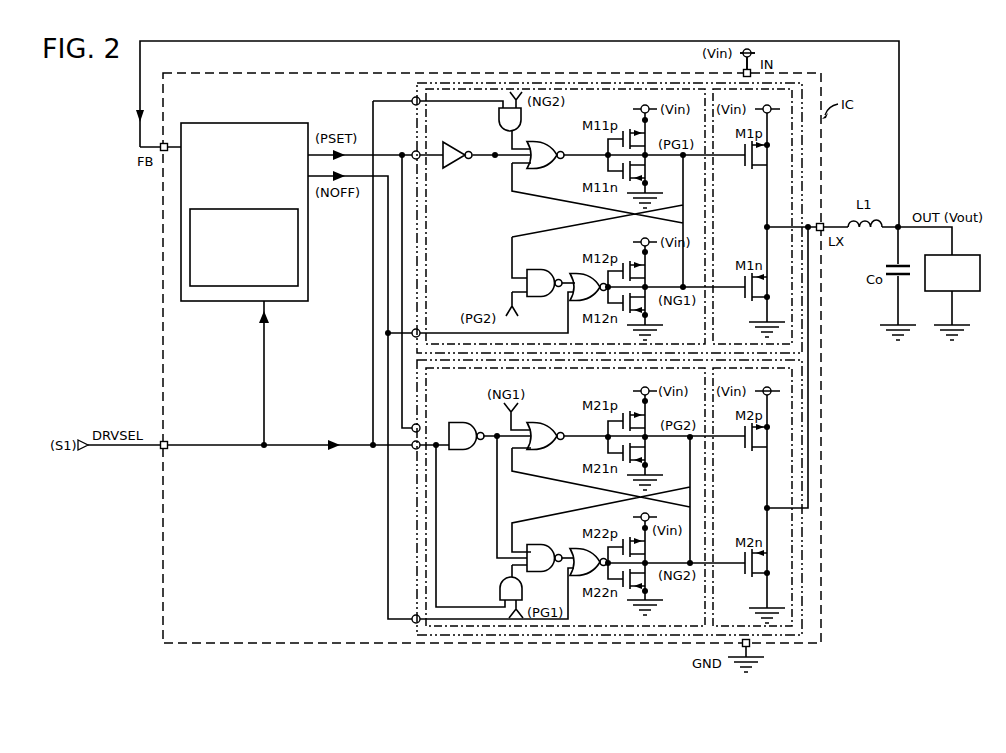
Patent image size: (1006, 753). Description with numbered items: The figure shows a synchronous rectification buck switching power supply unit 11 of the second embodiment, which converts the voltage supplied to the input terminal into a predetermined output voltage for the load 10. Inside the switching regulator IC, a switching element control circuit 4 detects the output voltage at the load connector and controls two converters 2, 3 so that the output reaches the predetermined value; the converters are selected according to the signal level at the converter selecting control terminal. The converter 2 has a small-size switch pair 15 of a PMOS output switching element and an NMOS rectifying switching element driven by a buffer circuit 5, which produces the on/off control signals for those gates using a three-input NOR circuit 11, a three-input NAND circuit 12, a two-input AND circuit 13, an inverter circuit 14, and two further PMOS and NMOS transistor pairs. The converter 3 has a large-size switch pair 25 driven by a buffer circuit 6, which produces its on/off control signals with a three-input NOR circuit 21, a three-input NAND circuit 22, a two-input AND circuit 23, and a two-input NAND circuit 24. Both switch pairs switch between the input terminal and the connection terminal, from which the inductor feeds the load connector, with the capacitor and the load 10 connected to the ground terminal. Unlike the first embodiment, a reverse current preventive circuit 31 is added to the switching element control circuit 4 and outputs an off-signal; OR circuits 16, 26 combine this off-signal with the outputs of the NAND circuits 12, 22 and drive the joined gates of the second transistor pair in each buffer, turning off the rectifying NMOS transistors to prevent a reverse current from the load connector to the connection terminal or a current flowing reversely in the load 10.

The converter 2 is at (414, 93).
The converter 3 is at (414, 529).
The switching element control circuit 4 is at (291, 122).
The buffer circuit 5 is at (627, 88).
The buffer circuit 6 is at (605, 630).
The load 10 is at (966, 293).
The NOR circuit 11 is at (548, 142).
The NAND circuit 12 is at (541, 298).
The AND circuit 13 is at (498, 121).
The inverter circuit 14 is at (449, 170).
The switch pair 15 is at (781, 87).
The OR circuit 16 is at (574, 282).
The NOR circuit 21 is at (547, 425).
The NAND circuit 22 is at (530, 546).
The AND circuit 23 is at (498, 590).
The NAND circuit 24 is at (462, 451).
The switch pair 25 is at (780, 632).
The OR circuit 26 is at (578, 550).
The reverse current preventive circuit 31 is at (238, 287).